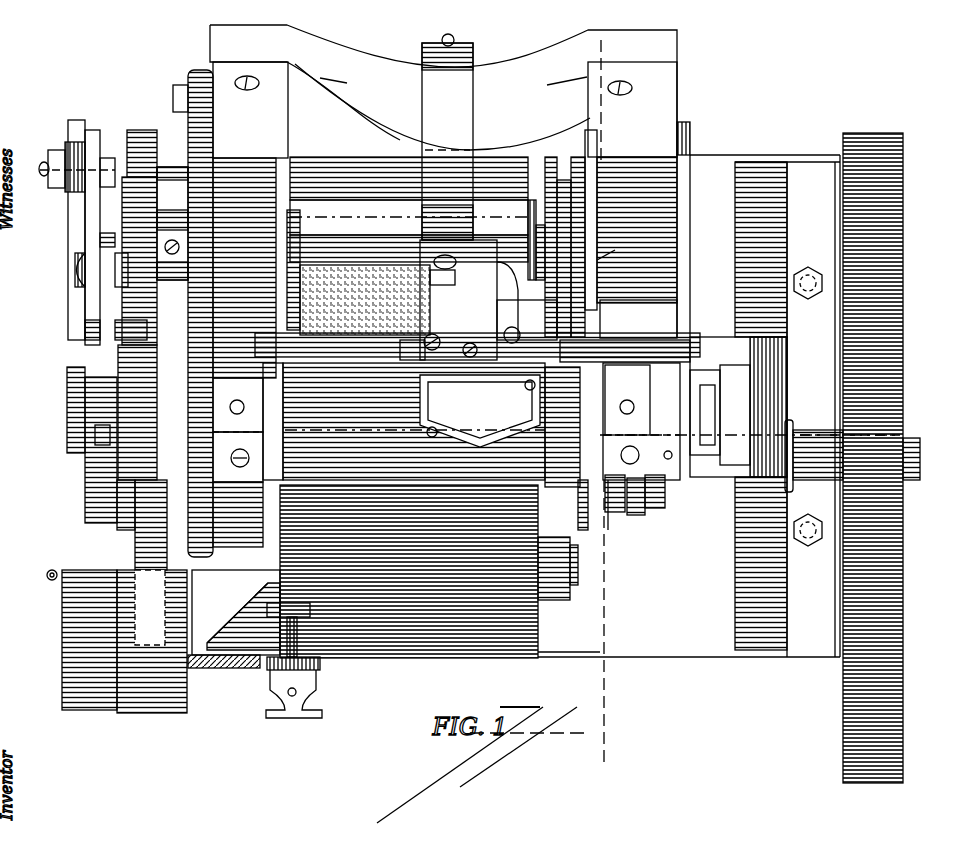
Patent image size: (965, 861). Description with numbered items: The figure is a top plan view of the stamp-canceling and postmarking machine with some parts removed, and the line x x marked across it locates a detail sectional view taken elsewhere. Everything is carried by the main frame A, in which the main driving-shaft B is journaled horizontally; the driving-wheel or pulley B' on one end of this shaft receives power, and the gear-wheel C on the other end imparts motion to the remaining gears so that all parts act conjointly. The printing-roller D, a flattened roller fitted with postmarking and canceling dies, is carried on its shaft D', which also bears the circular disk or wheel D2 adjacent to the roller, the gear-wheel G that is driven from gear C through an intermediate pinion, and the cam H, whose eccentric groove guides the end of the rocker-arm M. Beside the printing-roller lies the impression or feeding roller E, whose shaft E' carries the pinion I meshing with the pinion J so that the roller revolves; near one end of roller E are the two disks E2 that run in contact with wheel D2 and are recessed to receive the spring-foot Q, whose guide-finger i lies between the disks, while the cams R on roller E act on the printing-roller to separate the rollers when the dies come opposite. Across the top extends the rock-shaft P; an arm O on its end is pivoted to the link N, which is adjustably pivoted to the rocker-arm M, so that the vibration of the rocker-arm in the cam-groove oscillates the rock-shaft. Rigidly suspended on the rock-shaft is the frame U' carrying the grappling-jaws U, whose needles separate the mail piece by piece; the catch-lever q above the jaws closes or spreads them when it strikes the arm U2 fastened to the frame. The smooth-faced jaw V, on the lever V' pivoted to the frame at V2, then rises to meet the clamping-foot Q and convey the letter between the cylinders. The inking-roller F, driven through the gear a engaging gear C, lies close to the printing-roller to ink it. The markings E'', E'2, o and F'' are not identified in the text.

The main frame A is at (175, 72).
The section line x x is at (614, 397).
The driving-wheel or pulley B' is at (891, 458).
The main driving-shaft B is at (852, 443).
The rock-shaft P is at (660, 345).
The smooth-faced jaw V is at (635, 421).
The lever V' is at (633, 427).
The pivot of lever V' V2 is at (638, 515).
The arm U2 is at (447, 137).
The frame U' is at (469, 300).
The spring-foot Q is at (603, 325).
The grappling-jaws U is at (410, 340).
The catch-lever q is at (440, 265).
The impression or feeding roller E is at (409, 218).
The impression-roller shaft E' is at (365, 300).
The roller journal E'' is at (295, 253).
The circular disks or wheels E2 is at (550, 157).
The gear wheel E'2 is at (568, 234).
The pawl o is at (528, 215).
The cams R is at (533, 250).
The guide-finger i is at (590, 290).
The printing-roller D is at (477, 416).
The printing-roller shaft D' is at (377, 462).
The circular disk or wheel D2 is at (562, 488).
The inking-roller F is at (409, 571).
The platen support F'' is at (412, 627).
The link N is at (93, 208).
The pinion J is at (136, 130).
The pinion I is at (150, 283).
The arm O is at (108, 303).
The gear-wheel C is at (93, 330).
The rocker-arm M is at (67, 372).
The gear-wheel G is at (110, 445).
The cam H is at (117, 503).
The gear a is at (140, 555).